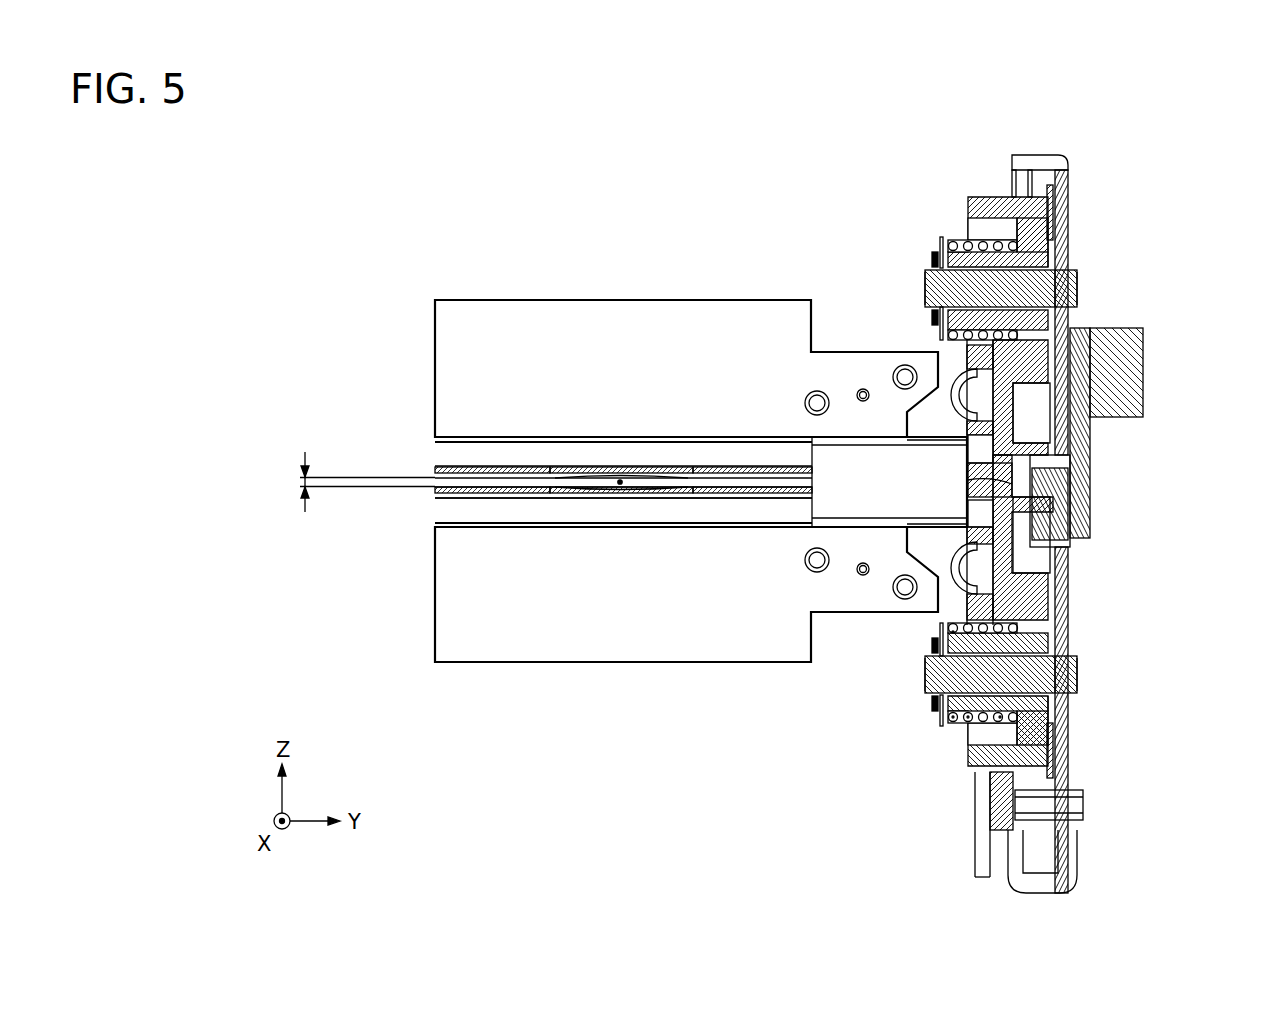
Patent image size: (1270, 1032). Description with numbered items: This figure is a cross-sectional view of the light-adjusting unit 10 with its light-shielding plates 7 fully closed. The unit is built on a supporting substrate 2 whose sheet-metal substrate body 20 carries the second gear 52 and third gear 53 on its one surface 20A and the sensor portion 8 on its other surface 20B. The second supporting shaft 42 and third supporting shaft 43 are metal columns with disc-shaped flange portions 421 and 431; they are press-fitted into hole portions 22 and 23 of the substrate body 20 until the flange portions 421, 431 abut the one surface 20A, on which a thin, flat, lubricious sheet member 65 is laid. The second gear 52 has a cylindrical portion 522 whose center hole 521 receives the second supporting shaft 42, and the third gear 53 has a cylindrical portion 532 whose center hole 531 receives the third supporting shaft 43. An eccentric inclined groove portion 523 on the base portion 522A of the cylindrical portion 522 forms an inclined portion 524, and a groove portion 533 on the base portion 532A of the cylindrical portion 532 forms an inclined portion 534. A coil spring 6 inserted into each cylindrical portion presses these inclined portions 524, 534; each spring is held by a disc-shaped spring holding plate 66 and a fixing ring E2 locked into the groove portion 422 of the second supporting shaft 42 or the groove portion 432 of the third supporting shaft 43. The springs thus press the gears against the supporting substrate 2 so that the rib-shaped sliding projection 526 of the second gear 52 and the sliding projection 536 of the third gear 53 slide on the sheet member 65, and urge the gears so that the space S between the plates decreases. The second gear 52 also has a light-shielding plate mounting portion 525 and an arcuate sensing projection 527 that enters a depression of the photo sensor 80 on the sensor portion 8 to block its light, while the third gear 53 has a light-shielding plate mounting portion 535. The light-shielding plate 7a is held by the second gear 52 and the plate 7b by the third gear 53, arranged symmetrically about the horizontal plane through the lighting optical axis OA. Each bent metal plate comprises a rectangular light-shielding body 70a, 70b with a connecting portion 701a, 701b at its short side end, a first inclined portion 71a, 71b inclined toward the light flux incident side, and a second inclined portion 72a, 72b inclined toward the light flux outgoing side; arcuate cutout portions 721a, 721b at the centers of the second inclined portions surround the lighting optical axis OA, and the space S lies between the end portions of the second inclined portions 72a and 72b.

The supporting substrate 2 is at (1035, 479).
The light-adjusting unit 10 is at (1035, 492).
The coil spring 6 is at (942, 501).
The light-shielding plates 7 is at (622, 481).
The light-shielding plate 7a is at (686, 642).
The light-shielding plate 7b is at (686, 321).
The light-shielding body 70a is at (612, 640).
The light-shielding body 70b is at (605, 325).
The connecting portion 701a is at (832, 572).
The connecting portion 701b is at (830, 388).
The first inclined portion 71a is at (483, 517).
The first inclined portion 71b is at (478, 448).
The second inclined portion 72a is at (465, 495).
The second inclined portion 72b is at (462, 468).
The cutout portion 721a is at (622, 494).
The cutout portion 721b is at (624, 474).
The lighting optical axis OA is at (626, 486).
The space S is at (356, 482).
The sensor portion 8 is at (1157, 433).
The sensor 80 is at (1070, 520).
The substrate body 20 is at (1103, 491).
The one surface 20A is at (1050, 165).
The other surface 20B is at (1070, 170).
The hole portion 22 is at (1070, 685).
The hole portion 23 is at (1070, 310).
The second supporting shaft 42 is at (1006, 677).
The third supporting shaft 43 is at (1011, 299).
The flange portion 421 is at (1060, 628).
The groove portion 422 is at (928, 690).
The flange portion 431 is at (1062, 322).
The groove portion 432 is at (928, 290).
The second gear 52 is at (1014, 674).
The third gear 53 is at (1039, 492).
The center hole 521 is at (965, 720).
The cylindrical portion 522 is at (950, 718).
The base portion 522A is at (1055, 700).
The groove portion 523 is at (1000, 720).
The inclined portion 524 is at (1055, 718).
The light-shielding plate mounting portion 525 is at (935, 565).
The sliding projection 526 is at (1060, 745).
The sensing projection 527 is at (1025, 482).
The center hole 531 is at (960, 242).
The cylindrical portion 532 is at (938, 320).
The base portion 532A is at (1049, 262).
The groove portion 533 is at (1006, 225).
The inclined portion 534 is at (1052, 232).
The light-shielding plate mounting portion 535 is at (912, 400).
The sliding projection 536 is at (1143, 370).
The sheet member 65 is at (1072, 606).
The spring holding plate 66 is at (940, 245).
The fixing ring E2 is at (934, 257).